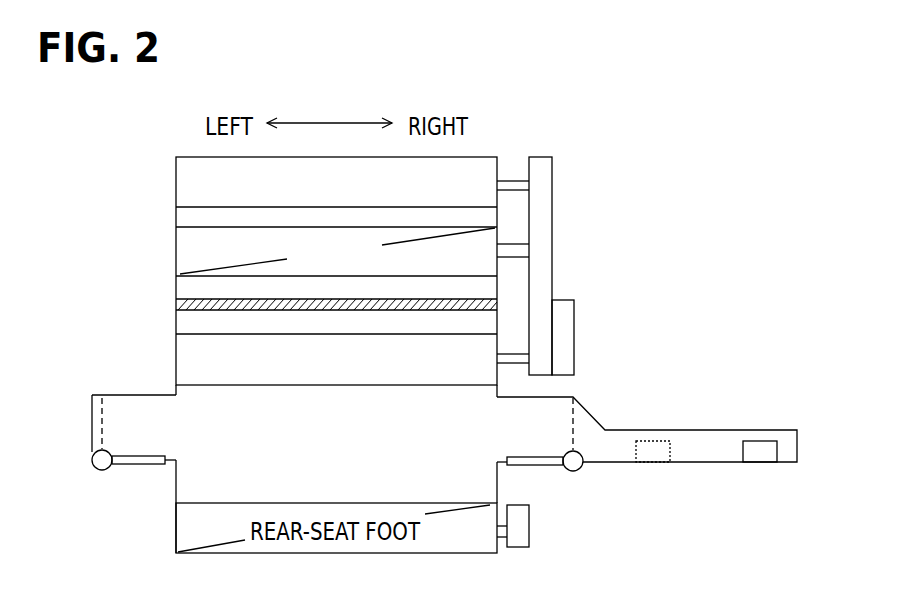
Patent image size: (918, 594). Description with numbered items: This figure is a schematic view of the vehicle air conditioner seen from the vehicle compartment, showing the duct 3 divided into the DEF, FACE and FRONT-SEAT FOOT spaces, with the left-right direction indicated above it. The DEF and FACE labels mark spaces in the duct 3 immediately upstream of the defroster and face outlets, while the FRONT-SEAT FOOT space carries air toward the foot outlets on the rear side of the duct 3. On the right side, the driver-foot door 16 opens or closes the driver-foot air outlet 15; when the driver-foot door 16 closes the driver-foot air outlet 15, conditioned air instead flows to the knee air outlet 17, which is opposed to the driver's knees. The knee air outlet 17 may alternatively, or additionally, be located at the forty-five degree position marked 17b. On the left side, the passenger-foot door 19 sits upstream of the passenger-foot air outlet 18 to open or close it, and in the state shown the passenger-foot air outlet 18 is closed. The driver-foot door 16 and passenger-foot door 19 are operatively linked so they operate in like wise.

The duct 3 is at (176, 250).
The driver-foot air outlet 15 is at (543, 468).
The driver-foot door 16 is at (548, 456).
The knee air outlet 17 is at (758, 462).
The knee air outlet position 17b is at (652, 462).
The passenger-foot air outlet 18 is at (132, 472).
The passenger-foot door 19 is at (137, 456).